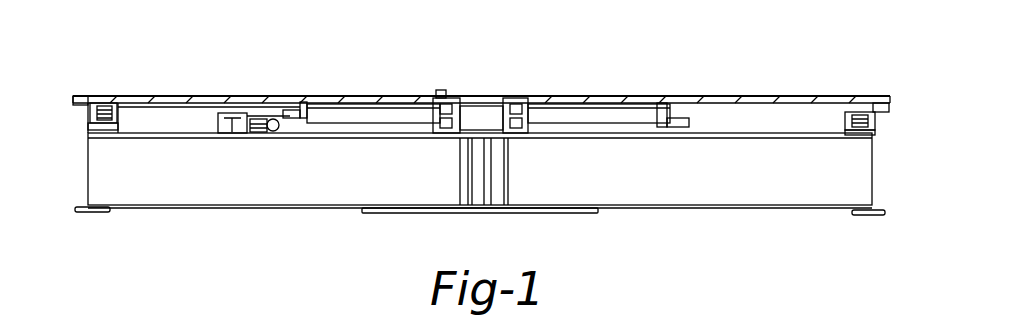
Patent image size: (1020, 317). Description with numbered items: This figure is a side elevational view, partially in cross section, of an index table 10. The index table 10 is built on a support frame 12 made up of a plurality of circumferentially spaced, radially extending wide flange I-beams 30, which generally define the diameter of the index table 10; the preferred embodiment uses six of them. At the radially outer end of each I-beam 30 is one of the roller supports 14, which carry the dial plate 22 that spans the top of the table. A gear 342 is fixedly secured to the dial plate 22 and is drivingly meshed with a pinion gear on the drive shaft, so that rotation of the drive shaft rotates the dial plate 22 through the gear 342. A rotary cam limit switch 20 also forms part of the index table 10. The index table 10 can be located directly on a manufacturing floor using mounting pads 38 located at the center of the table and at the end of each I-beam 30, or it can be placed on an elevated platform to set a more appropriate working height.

The index table 10 is at (212, 72).
The support frame 12 is at (74, 163).
The roller supports 14 is at (877, 120).
The rotary cam limit switch 20 is at (235, 137).
The dial plate 22 is at (252, 94).
The wide flange I-beams 30 is at (240, 202).
The mounting pads 38 is at (93, 217).
The gear 342 is at (668, 125).